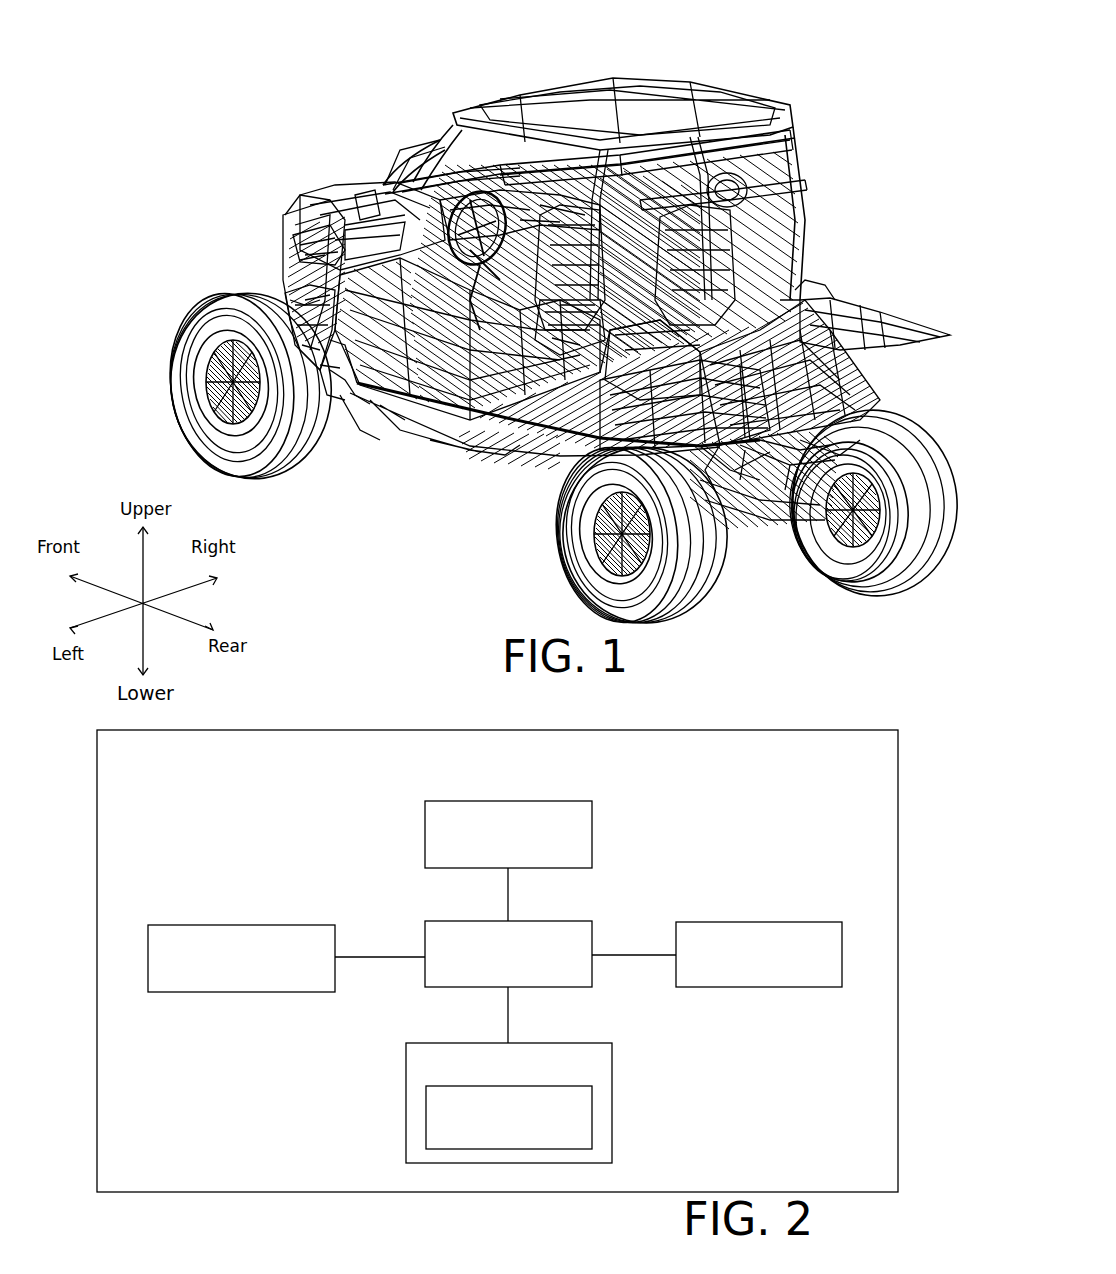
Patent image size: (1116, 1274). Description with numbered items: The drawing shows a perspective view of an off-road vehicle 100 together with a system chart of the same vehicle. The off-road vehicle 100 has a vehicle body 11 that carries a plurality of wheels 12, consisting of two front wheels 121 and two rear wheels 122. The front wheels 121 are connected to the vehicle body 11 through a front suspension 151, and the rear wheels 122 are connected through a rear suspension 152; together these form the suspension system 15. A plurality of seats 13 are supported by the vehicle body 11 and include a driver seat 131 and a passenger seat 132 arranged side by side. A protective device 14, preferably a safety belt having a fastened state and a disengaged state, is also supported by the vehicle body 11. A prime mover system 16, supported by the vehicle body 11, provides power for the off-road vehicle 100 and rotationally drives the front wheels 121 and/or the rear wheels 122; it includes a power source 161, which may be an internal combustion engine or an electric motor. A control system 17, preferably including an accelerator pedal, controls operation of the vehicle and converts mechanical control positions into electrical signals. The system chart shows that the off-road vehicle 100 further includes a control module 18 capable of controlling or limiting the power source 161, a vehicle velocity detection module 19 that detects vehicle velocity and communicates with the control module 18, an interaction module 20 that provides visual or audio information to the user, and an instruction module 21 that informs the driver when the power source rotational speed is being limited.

In FIG. 1, the off-road vehicle 100 is at (207, 26).
In FIG. 2, the off-road vehicle 100 is at (308, 730).
In FIG. 1, the vehicle body 11 is at (293, 235).
In FIG. 1, the wheels 12 is at (290, 484).
In FIG. 1, the front wheels 121 is at (175, 337).
In FIG. 1, the rear wheels 122 is at (710, 597).
In FIG. 1, the seats 13 is at (663, 163).
In FIG. 1, the driver seat 131 is at (560, 215).
In FIG. 1, the passenger seat 132 is at (753, 192).
In FIG. 1, the protective device 14 is at (545, 300).
In FIG. 1, the suspension system 15 is at (262, 252).
In FIG. 1, the front suspension 151 is at (285, 293).
In FIG. 1, the rear suspension 152 is at (640, 395).
In FIG. 1, the prime mover system 16 is at (463, 477).
In FIG. 2, the prime mover system 16 is at (535, 1043).
In FIG. 2, the power source 161 is at (592, 1113).
In FIG. 1, the control system 17 is at (413, 182).
In FIG. 2, the control module 18 is at (533, 921).
In FIG. 2, the vehicle velocity detection module 19 is at (277, 925).
In FIG. 2, the interaction module 20 is at (785, 922).
In FIG. 2, the instruction module 21 is at (573, 801).